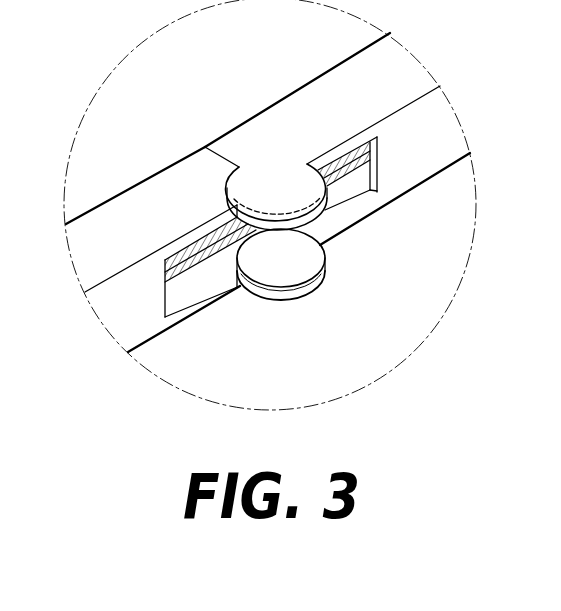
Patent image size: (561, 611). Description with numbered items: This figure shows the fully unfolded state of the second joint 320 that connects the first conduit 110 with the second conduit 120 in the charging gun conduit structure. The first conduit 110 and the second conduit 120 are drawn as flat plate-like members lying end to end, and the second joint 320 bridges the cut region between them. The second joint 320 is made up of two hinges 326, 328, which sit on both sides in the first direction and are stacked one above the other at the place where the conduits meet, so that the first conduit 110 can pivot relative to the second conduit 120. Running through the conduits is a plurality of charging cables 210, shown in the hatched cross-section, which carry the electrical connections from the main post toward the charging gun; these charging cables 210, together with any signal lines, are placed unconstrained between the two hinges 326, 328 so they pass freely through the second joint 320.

The first conduit 110 is at (160, 174).
The second conduit 120 is at (315, 90).
The charging cables 210 is at (192, 268).
The second joint 320 is at (334, 232).
The hinge 326 is at (313, 194).
The hinge 328 is at (320, 253).